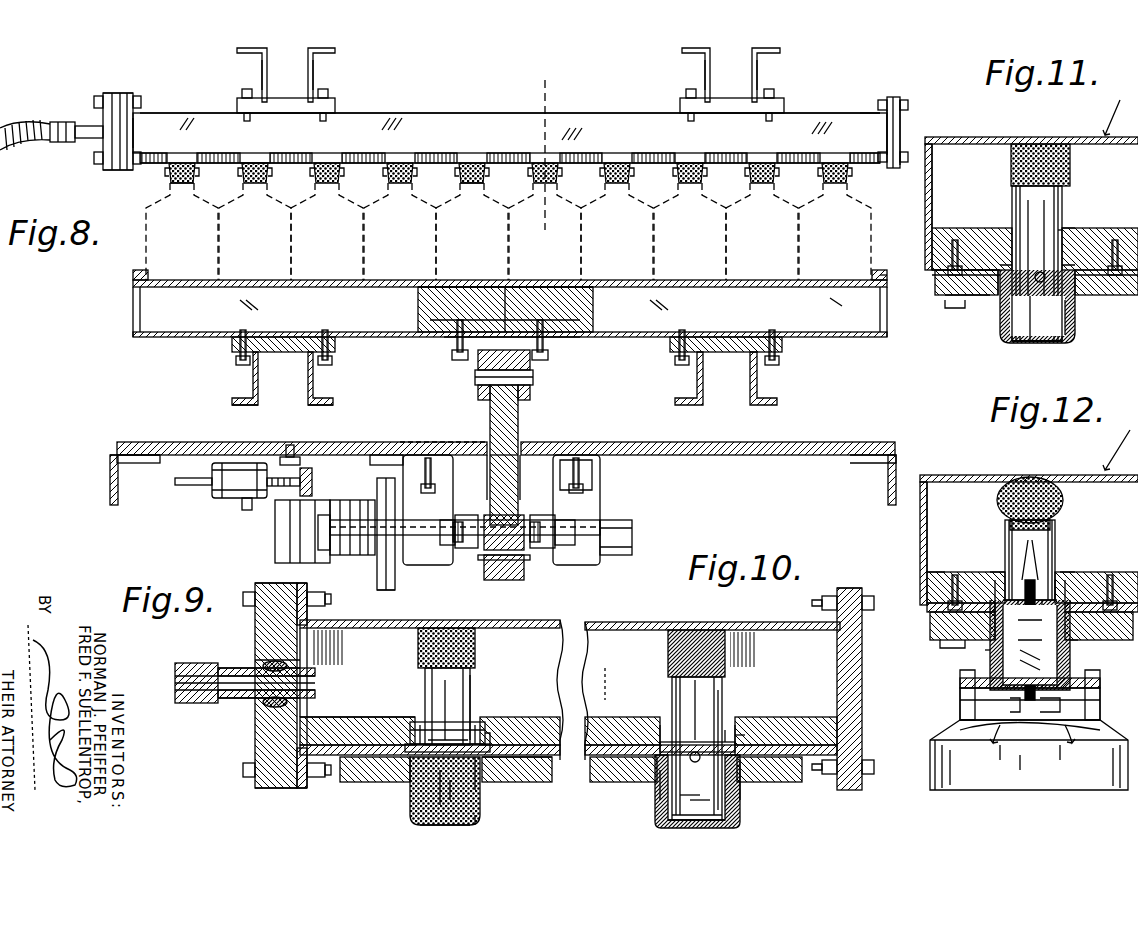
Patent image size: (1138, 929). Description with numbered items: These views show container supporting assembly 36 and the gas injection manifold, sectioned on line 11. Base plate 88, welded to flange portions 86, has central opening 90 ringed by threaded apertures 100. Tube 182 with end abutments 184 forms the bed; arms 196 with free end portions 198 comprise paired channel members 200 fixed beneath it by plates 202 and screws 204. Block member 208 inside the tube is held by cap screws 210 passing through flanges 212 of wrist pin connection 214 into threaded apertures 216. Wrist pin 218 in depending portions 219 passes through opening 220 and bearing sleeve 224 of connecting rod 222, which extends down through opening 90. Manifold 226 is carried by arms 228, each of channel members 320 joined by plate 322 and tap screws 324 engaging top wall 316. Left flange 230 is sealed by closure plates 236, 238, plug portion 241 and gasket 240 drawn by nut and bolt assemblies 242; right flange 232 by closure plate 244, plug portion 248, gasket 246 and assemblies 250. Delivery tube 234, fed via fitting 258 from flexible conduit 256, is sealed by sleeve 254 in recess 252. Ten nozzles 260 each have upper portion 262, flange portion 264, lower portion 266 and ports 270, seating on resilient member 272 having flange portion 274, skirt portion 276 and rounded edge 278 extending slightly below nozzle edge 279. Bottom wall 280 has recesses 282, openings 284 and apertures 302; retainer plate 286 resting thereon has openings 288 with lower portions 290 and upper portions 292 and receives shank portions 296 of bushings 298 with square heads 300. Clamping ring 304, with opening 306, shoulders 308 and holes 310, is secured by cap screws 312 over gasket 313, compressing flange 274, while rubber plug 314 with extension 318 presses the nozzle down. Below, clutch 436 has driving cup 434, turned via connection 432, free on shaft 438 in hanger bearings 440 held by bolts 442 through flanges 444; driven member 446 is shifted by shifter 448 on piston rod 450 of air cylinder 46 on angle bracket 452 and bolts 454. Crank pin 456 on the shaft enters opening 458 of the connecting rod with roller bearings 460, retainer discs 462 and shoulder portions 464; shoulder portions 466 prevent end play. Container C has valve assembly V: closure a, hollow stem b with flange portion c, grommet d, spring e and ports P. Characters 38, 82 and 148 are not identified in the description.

In FIG. 8, the section line 11 is at (545, 153).
In FIG. 8, the container supporting assembly 36 is at (131, 360).
In FIG. 8, the filling head 38 is at (833, 110).
In FIG. 9, the filling head 38 is at (221, 740).
In FIG. 10, the filling head 38 is at (810, 605).
In FIG. 8, the air cylinder 46 is at (220, 463).
In FIG. 8, the frame channel 82 is at (110, 492).
In FIG. 8, the inturned flange portions 86 is at (112, 466).
In FIG. 8, the base plate 88 is at (872, 440).
In FIG. 8, the circular opening 90 is at (522, 490).
In FIG. 8, the threaded apertures 100 is at (395, 444).
In FIG. 8, the bracket 148 is at (140, 440).
In FIG. 8, the rectangular tube 182 is at (133, 330).
In FIG. 8, the abutment 184 is at (140, 276).
In FIG. 11, the abutment 184 is at (880, 265).
In FIG. 8, the composite arms 196 is at (320, 387).
In FIG. 8, the free end portions 198 is at (246, 384).
In FIG. 8, the channel-shaped members 200 is at (318, 400).
In FIG. 8, the plates 202 is at (262, 352).
In FIG. 8, the tap screws 204 is at (238, 360).
In FIG. 8, the block member 208 is at (595, 300).
In FIG. 8, the cap screws 210 is at (462, 352).
In FIG. 8, the lateral flanges 212 is at (452, 343).
In FIG. 8, the wrist pin connection 214 is at (478, 362).
In FIG. 8, the threaded apertures 216 is at (430, 318).
In FIG. 8, the wrist pin 218 is at (533, 378).
In FIG. 8, the depending portions 219 is at (478, 392).
In FIG. 8, the circular opening 220 is at (520, 405).
In FIG. 8, the connecting rod 222 is at (525, 435).
In FIG. 8, the bearing sleeve 224 is at (503, 282).
In FIG. 8, the manifold 226 is at (608, 120).
In FIG. 9, the manifold 226 is at (332, 619).
In FIG. 10, the manifold 226 is at (623, 627).
In FIG. 11, the manifold 226 is at (930, 188).
In FIG. 12, the manifold 226 is at (913, 492).
In FIG. 8, the composite arms 228 is at (332, 70).
In FIG. 8, the peripheral flange 230 is at (131, 95).
In FIG. 9, the peripheral flange 230 is at (303, 790).
In FIG. 8, the flange 232 is at (905, 96).
In FIG. 10, the flange 232 is at (825, 775).
In FIG. 8, the delivery tube 234 is at (92, 120).
In FIG. 9, the delivery tube 234 is at (234, 663).
In FIG. 8, the first closure plate 236 is at (120, 172).
In FIG. 9, the first closure plate 236 is at (280, 790).
In FIG. 8, the second closure plate 238 is at (108, 172).
In FIG. 9, the second closure plate 238 is at (258, 753).
In FIG. 8, the resilient gasket 240 is at (139, 120).
In FIG. 9, the resilient gasket 240 is at (298, 790).
In FIG. 9, the plug portion 241 is at (310, 715).
In FIG. 8, the nut and bolt assemblies 242 is at (100, 95).
In FIG. 9, the nut and bolt assemblies 242 is at (243, 592).
In FIG. 8, the closure plate 244 is at (905, 118).
In FIG. 12, the closure plate 244 is at (960, 678).
In FIG. 8, the resilient gasket 246 is at (905, 132).
In FIG. 10, the plug portion 248 is at (838, 672).
In FIG. 8, the nut and bolt assemblies 250 is at (872, 105).
In FIG. 10, the nut and bolt assemblies 250 is at (822, 602).
In FIG. 9, the recess 252 is at (290, 675).
In FIG. 9, the annular sealing sleeve 254 is at (275, 660).
In FIG. 8, the flexible conduit 256 is at (41, 124).
In FIG. 8, the fitting 258 is at (80, 143).
In FIG. 9, the fitting 258 is at (180, 660).
In FIG. 9, the injection nozzle 260 is at (485, 690).
In FIG. 10, the injection nozzle 260 is at (663, 689).
In FIG. 11, the injection nozzle 260 is at (1005, 200).
In FIG. 12, the injection nozzle 260 is at (998, 542).
In FIG. 9, the tubular upper portion 262 is at (420, 680).
In FIG. 10, the tubular upper portion 262 is at (670, 675).
In FIG. 11, the tubular upper portion 262 is at (1068, 206).
In FIG. 12, the tubular upper portion 262 is at (1058, 530).
In FIG. 9, the flange portion 264 is at (482, 688).
In FIG. 10, the flange portion 264 is at (722, 700).
In FIG. 11, the flange portion 264 is at (1062, 240).
In FIG. 12, the flange portion 264 is at (1075, 580).
In FIG. 10, the tubular lower portion 266 is at (665, 815).
In FIG. 11, the tubular lower portion 266 is at (1050, 340).
In FIG. 10, the horizontal ports 270 is at (697, 752).
In FIG. 11, the horizontal ports 270 is at (1042, 270).
In FIG. 12, the horizontal ports 270 is at (1033, 540).
In FIG. 8, the funnel-shaped member 272 is at (182, 185).
In FIG. 9, the funnel-shaped member 272 is at (415, 810).
In FIG. 10, the funnel-shaped member 272 is at (658, 808).
In FIG. 11, the funnel-shaped member 272 is at (1000, 338).
In FIG. 9, the flange portion 274 is at (478, 795).
In FIG. 10, the flange portion 274 is at (660, 780).
In FIG. 11, the flange portion 274 is at (1085, 228).
In FIG. 8, the skirt portion 276 is at (472, 185).
In FIG. 10, the skirt portion 276 is at (740, 790).
In FIG. 12, the skirt portion 276 is at (1000, 665).
In FIG. 9, the rounded lower marginal edge portion 278 is at (413, 820).
In FIG. 10, the rounded lower marginal edge portion 278 is at (730, 820).
In FIG. 11, the rounded lower marginal edge portion 278 is at (1075, 330).
In FIG. 10, the edge 279 is at (725, 805).
In FIG. 11, the edge 279 is at (1035, 345).
In FIG. 8, the bottom wall 280 is at (180, 165).
In FIG. 9, the bottom wall 280 is at (352, 760).
In FIG. 10, the bottom wall 280 is at (862, 748).
In FIG. 12, the bottom wall 280 is at (930, 610).
In FIG. 9, the annular recesses 282 is at (400, 730).
In FIG. 10, the annular recesses 282 is at (645, 745).
In FIG. 12, the annular recesses 282 is at (990, 575).
In FIG. 9, the circular openings 284 is at (485, 740).
In FIG. 10, the circular openings 284 is at (740, 745).
In FIG. 11, the circular openings 284 is at (1028, 260).
In FIG. 12, the circular openings 284 is at (1003, 577).
In FIG. 8, the nozzle retainer plate 286 is at (510, 158).
In FIG. 9, the nozzle retainer plate 286 is at (330, 735).
In FIG. 10, the nozzle retainer plate 286 is at (862, 722).
In FIG. 11, the nozzle retainer plate 286 is at (965, 230).
In FIG. 12, the nozzle retainer plate 286 is at (940, 573).
In FIG. 9, the annular openings 288 is at (410, 790).
In FIG. 10, the annular openings 288 is at (735, 730).
In FIG. 12, the annular openings 288 is at (1080, 565).
In FIG. 9, the lower portions 290 is at (490, 730).
In FIG. 10, the lower portions 290 is at (738, 735).
In FIG. 11, the lower portions 290 is at (1005, 295).
In FIG. 12, the lower portions 290 is at (1095, 580).
In FIG. 9, the upper portions 292 is at (482, 725).
In FIG. 10, the upper portions 292 is at (725, 720).
In FIG. 11, the upper portions 292 is at (1028, 245).
In FIG. 12, the upper portions 292 is at (1075, 560).
In FIG. 11, the shank portion 296 is at (945, 258).
In FIG. 12, the shank portion 296 is at (935, 557).
In FIG. 12, the bushing 298 is at (977, 562).
In FIG. 11, the square head portion 300 is at (937, 223).
In FIG. 11, the apertures 302 is at (965, 300).
In FIG. 12, the apertures 302 is at (945, 588).
In FIG. 8, the clamping ring 304 is at (200, 156).
In FIG. 9, the clamping ring 304 is at (375, 785).
In FIG. 10, the clamping ring 304 is at (800, 785).
In FIG. 11, the clamping ring 304 is at (935, 280).
In FIG. 12, the clamping ring 304 is at (935, 625).
In FIG. 9, the opening 306 is at (485, 785).
In FIG. 10, the opening 306 is at (690, 800).
In FIG. 11, the opening 306 is at (1040, 296).
In FIG. 9, the shoulders 308 is at (545, 770).
In FIG. 11, the shoulders 308 is at (1000, 300).
In FIG. 12, the shoulders 308 is at (985, 645).
In FIG. 11, the holes 310 is at (990, 228).
In FIG. 8, the cap screws 312 is at (255, 185).
In FIG. 9, the cap screws 312 is at (485, 823).
In FIG. 11, the cap screws 312 is at (950, 325).
In FIG. 12, the cap screws 312 is at (950, 640).
In FIG. 8, the annular gasket 313 is at (336, 160).
In FIG. 9, the annular gasket 313 is at (315, 685).
In FIG. 10, the annular gasket 313 is at (610, 760).
In FIG. 11, the annular gasket 313 is at (945, 272).
In FIG. 9, the rubber plug 314 is at (425, 642).
In FIG. 10, the rubber plug 314 is at (695, 637).
In FIG. 11, the rubber plug 314 is at (1045, 150).
In FIG. 12, the rubber plug 314 is at (1035, 480).
In FIG. 8, the top wall 316 is at (494, 113).
In FIG. 9, the top wall 316 is at (380, 619).
In FIG. 10, the top wall 316 is at (668, 618).
In FIG. 11, the top wall 316 is at (1102, 136).
In FIG. 12, the top wall 316 is at (977, 472).
In FIG. 10, the reduced extension 318 is at (672, 697).
In FIG. 11, the reduced extension 318 is at (1065, 188).
In FIG. 8, the channel-shaped members 320 is at (315, 81).
In FIG. 8, the plate 322 is at (340, 108).
In FIG. 8, the tap screws 324 is at (247, 92).
In FIG. 8, the driving connection 432 is at (395, 592).
In FIG. 8, the cup member 434 is at (396, 575).
In FIG. 8, the friction disc type clutch 436 is at (385, 440).
In FIG. 8, the shaft 438 is at (275, 532).
In FIG. 8, the hanger bearings 440 is at (380, 565).
In FIG. 8, the bolts 442 is at (420, 460).
In FIG. 8, the outstanding flanges 444 is at (596, 470).
In FIG. 8, the driven member 446 is at (285, 558).
In FIG. 8, the shifter 448 is at (312, 492).
In FIG. 8, the piston rod 450 is at (278, 485).
In FIG. 8, the angle bracket 452 is at (285, 445).
In FIG. 8, the bolts 454 is at (294, 446).
In FIG. 8, the crank pin 456 is at (518, 582).
In FIG. 8, the circular opening 458 is at (500, 512).
In FIG. 8, the roller bearings 460 is at (485, 516).
In FIG. 8, the retainer discs 462 is at (522, 520).
In FIG. 8, the annular shoulder portions 464 is at (480, 548).
In FIG. 8, the annular shoulder portions 466 is at (480, 528).
In FIG. 8, the container C is at (140, 232).
In FIG. 12, the dispensing valve assembly V is at (980, 703).
In FIG. 12, the ports P is at (1060, 703).
In FIG. 12, the closure a is at (1095, 688).
In FIG. 12, the stem b is at (1070, 648).
In FIG. 12, the flange portion c is at (1040, 718).
In FIG. 12, the grommet d is at (960, 688).
In FIG. 12, the compression spring e is at (985, 655).